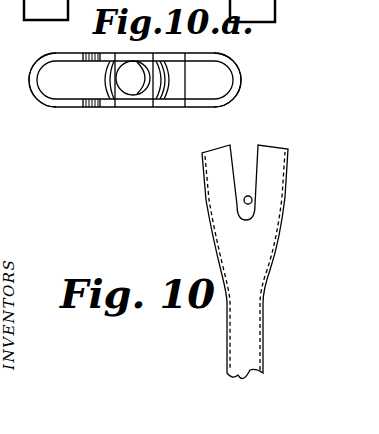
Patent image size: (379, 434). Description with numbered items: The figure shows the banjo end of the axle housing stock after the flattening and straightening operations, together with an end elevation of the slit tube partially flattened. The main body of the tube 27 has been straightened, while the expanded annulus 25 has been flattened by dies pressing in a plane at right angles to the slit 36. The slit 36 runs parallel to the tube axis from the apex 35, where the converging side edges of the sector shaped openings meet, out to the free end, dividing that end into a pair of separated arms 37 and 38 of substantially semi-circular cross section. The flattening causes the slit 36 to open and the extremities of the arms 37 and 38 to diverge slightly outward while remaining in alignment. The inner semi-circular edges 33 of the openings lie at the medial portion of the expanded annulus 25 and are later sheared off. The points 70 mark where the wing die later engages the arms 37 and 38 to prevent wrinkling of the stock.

In FIG. 10, the points 70 is at (210, 237).
In FIG. 10a, the main body of the tube 27 is at (138, 90).
In FIG. 10, the main body of the tube 27 is at (266, 333).
In FIG. 10a, the expanded annulus 25 is at (95, 106).
In FIG. 10, the expanded annulus 25 is at (207, 218).
In FIG. 10, the inner semi-circular edges 33 is at (250, 222).
In FIG. 10, the apex 35 is at (252, 200).
In FIG. 10a, the slit 36 is at (163, 101).
In FIG. 10, the slit 36 is at (255, 158).
In FIG. 10a, the arm 37 is at (43, 100).
In FIG. 10, the arm 37 is at (217, 163).
In FIG. 10a, the arm 38 is at (232, 96).
In FIG. 10, the arm 38 is at (273, 167).